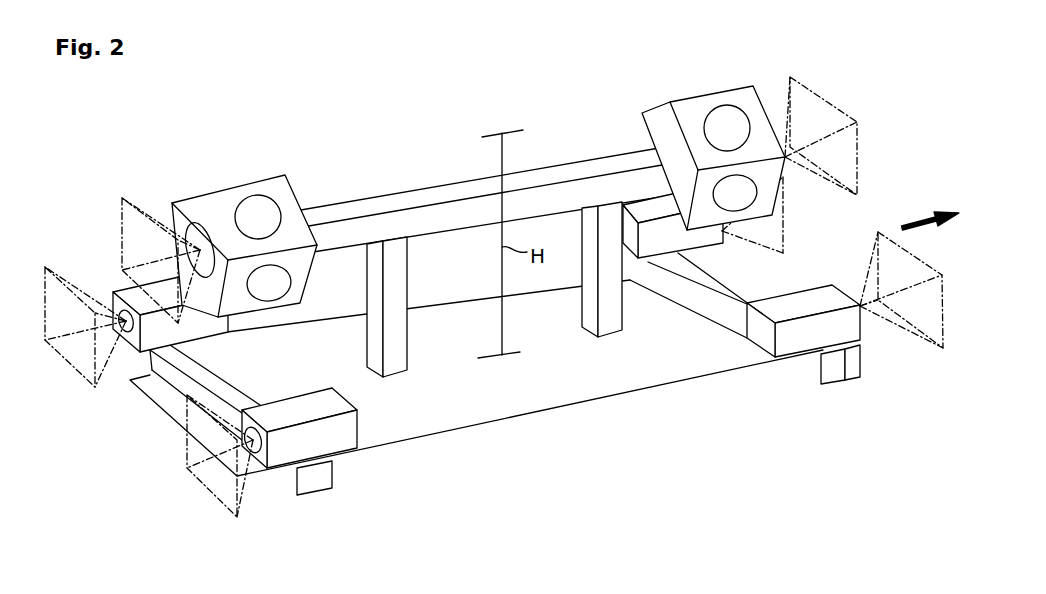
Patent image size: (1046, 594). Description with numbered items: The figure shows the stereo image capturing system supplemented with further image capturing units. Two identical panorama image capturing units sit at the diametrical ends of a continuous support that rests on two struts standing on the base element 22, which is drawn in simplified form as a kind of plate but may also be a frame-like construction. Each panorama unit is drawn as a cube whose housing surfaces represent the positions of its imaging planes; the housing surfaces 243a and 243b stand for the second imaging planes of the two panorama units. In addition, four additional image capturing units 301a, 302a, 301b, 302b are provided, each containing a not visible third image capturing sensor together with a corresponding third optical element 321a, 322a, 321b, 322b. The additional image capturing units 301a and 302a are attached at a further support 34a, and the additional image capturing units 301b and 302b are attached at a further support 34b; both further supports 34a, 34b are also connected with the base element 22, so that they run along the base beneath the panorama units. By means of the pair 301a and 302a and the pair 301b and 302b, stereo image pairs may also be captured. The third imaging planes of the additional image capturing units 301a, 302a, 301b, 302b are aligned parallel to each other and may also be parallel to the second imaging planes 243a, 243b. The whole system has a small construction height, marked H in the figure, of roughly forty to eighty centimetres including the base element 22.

The base element 22 is at (606, 381).
The further support 34a is at (700, 285).
The further support 34b is at (225, 388).
The additional image capturing unit 301a is at (830, 333).
The additional image capturing unit 301b is at (131, 290).
The additional image capturing unit 302a is at (688, 240).
The additional image capturing unit 302b is at (318, 440).
The third optical element 321a is at (906, 303).
The third optical element 321b is at (124, 327).
The third optical element 322a is at (723, 231).
The third optical element 322b is at (250, 447).
The housing surface / second imaging plane 243a is at (768, 107).
The housing surface / second imaging plane 243b is at (190, 210).